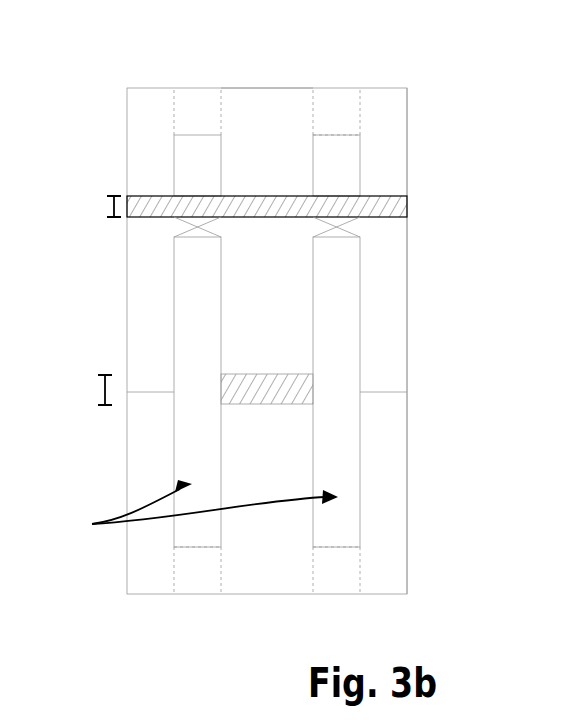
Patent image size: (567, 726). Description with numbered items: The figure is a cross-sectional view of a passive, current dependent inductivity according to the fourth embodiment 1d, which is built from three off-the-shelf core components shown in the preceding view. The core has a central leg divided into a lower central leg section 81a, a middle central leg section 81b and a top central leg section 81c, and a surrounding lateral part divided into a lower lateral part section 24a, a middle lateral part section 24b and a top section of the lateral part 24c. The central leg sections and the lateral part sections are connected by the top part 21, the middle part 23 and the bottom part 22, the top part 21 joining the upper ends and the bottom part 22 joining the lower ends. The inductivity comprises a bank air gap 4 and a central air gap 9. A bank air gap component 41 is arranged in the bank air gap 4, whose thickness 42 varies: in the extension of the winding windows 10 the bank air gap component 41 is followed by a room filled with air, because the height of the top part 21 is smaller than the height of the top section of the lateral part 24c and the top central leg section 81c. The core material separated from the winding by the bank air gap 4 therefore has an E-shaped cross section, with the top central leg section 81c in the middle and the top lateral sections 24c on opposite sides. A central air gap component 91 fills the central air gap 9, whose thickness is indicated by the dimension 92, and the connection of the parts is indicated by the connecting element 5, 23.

The passive, current dependent inductivity according to the fourth embodiment 1d is at (118, 76).
The top part 21 is at (332, 112).
The bottom part 22 is at (327, 573).
The lower lateral part section 24a is at (390, 460).
The middle lateral part section 24b is at (390, 304).
The top section of the lateral part 24c is at (390, 155).
The lower central leg section 81a is at (290, 520).
The middle central leg section 81b is at (272, 347).
The top central leg section 81c is at (282, 155).
The bank air gap 4 is at (395, 206).
The bank air gap component 41 is at (317, 219).
The yoke plate thickness 42 is at (97, 209).
The connecting element 5 is at (323, 228).
The middle part 23 is at (182, 248).
The central air gap 9 is at (272, 389).
The central air gap component 91 is at (364, 385).
The spacer thickness 92 is at (86, 390).
The winding windows 10 is at (196, 508).